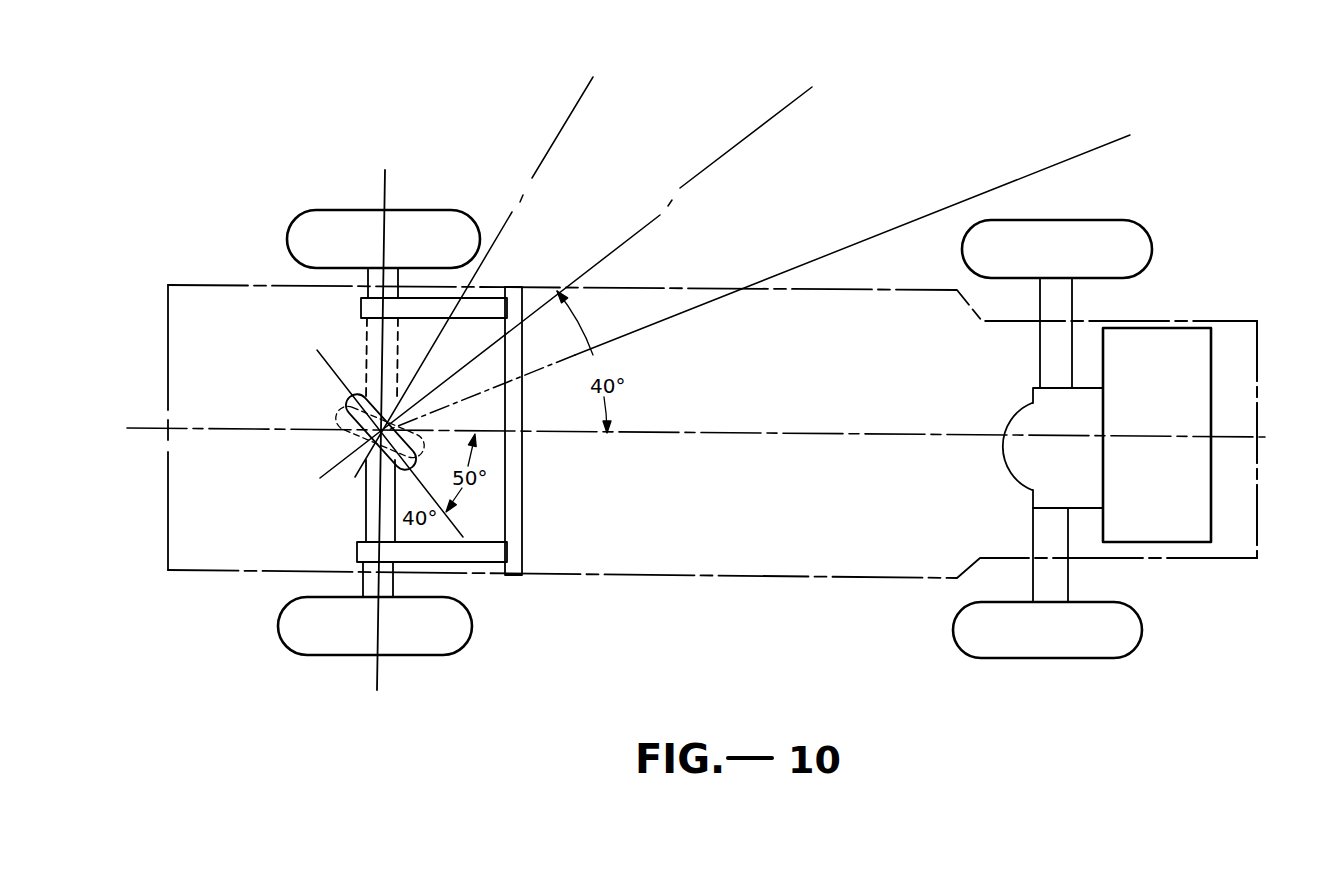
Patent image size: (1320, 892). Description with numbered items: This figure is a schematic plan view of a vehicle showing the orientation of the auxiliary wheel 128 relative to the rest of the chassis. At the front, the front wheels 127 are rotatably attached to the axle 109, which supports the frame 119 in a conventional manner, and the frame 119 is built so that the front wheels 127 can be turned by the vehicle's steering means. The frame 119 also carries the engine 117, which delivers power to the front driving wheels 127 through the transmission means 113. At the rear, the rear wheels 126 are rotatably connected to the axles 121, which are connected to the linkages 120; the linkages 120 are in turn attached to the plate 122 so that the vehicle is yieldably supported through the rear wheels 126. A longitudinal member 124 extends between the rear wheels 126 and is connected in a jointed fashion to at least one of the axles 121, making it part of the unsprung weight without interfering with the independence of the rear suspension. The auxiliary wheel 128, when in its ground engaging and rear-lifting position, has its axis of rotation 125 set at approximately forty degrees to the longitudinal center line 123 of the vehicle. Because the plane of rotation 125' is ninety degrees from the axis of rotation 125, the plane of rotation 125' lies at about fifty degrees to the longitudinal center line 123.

The axle 109 is at (1045, 348).
The transmission means 113 is at (1013, 467).
The engine 117 is at (1167, 522).
The frame 119 is at (1237, 558).
The linkages 120 is at (488, 307).
The axles 121 is at (391, 278).
The plate 122 is at (514, 396).
The longitudinal center line 123 is at (152, 425).
The longitudinal member 124 is at (367, 506).
The axis of rotation 125 is at (725, 277).
The plane of rotation 125' is at (362, 443).
The rear wheels 126 is at (447, 226).
The front wheels 127 is at (1070, 238).
The auxiliary wheel 128 is at (345, 418).